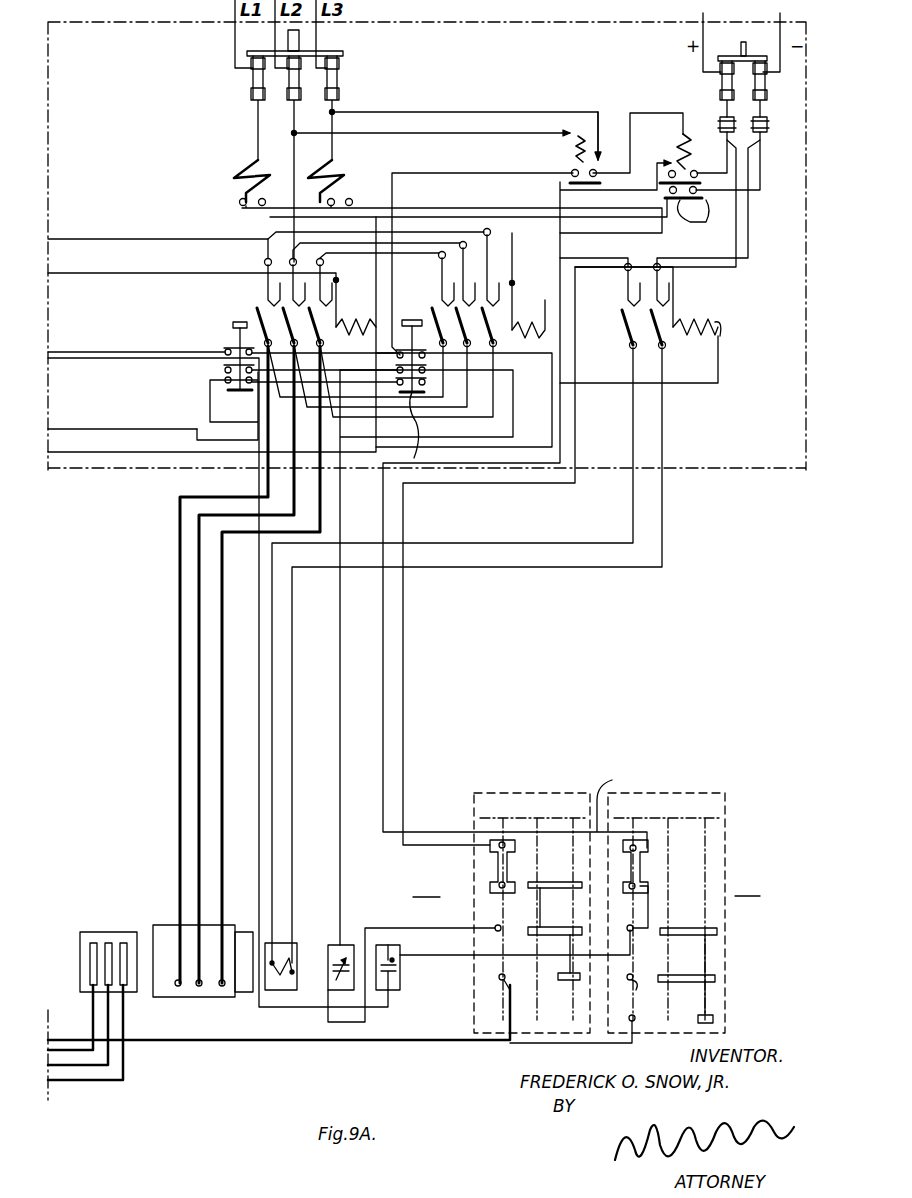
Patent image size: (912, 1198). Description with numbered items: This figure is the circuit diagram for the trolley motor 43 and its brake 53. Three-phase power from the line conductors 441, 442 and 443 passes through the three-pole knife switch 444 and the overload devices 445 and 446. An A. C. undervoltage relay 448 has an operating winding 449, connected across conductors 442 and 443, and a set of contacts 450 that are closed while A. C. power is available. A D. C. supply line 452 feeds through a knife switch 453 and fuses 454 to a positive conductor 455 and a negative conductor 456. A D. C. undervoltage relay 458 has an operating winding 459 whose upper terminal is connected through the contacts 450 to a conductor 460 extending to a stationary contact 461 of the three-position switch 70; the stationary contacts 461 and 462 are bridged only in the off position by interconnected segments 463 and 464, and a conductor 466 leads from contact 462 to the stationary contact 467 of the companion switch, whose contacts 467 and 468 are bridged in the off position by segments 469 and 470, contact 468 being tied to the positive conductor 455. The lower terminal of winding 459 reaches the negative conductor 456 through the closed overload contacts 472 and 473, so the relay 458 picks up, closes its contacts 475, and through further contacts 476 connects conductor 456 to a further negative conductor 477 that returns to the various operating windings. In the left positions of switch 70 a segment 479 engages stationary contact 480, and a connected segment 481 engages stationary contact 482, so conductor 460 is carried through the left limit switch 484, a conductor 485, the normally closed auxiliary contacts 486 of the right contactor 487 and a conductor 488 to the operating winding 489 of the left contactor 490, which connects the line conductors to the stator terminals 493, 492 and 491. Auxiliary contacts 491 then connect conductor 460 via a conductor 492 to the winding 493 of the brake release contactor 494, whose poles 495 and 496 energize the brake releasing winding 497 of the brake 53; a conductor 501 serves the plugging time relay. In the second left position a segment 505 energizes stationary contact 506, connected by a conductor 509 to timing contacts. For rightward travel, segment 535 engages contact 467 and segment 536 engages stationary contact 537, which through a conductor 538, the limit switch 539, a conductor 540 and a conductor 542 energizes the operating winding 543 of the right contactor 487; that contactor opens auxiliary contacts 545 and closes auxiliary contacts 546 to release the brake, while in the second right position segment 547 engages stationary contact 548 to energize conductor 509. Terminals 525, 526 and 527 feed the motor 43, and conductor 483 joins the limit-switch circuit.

The trolley motor 43 is at (157, 918).
The brake 53 is at (297, 948).
The three-position switch 70 is at (730, 812).
The line conductor 441 is at (250, 42).
The line conductor 442 is at (286, 54).
The line conductor 443 is at (300, 40).
The knife switch 444 is at (343, 53).
The overload device 445 is at (245, 172).
The overload device 446 is at (338, 172).
The A. C. undervoltage relay 448 is at (590, 128).
The operating winding 449 is at (575, 148).
The contacts 450 is at (572, 168).
The D. C. supply line 452 is at (782, 36).
The knife switch 453 is at (718, 60).
The fuses 454 is at (752, 124).
The positive conductor 455 is at (756, 154).
The negative conductor 456 is at (242, 210).
The D. C. undervoltage relay 458 is at (695, 118).
The operating winding 459 is at (680, 150).
The conductor 460 is at (100, 452).
The stationary contact 461 is at (645, 836).
The stationary contact 462 is at (644, 893).
The segment 463 is at (646, 851).
The segment 464 is at (646, 884).
The conductor 466 is at (600, 900).
The stationary contact 467 is at (516, 885).
The stationary contact 468 is at (516, 850).
The segment 469 is at (498, 885).
The segment 470 is at (500, 843).
The contacts 472 is at (238, 198).
The contacts 473 is at (350, 198).
The contacts 475 is at (680, 176).
The contacts 476 is at (678, 218).
The negative conductor 477 is at (108, 278).
The segment 479 is at (718, 930).
The stationary contact 480 is at (630, 932).
The segment 481 is at (716, 978).
The stationary contact 482 is at (644, 991).
The conductor 483 is at (458, 958).
The left limit switch 484 is at (402, 974).
The conductor 485 is at (110, 366).
The auxiliary contacts 486 is at (225, 366).
The right contactor 487 is at (262, 290).
The conductor 488 is at (197, 437).
The operating winding 489 is at (540, 322).
The left contactor 490 is at (506, 345).
The stator terminal 491 is at (180, 1008).
The stator terminal 492 is at (205, 1020).
The stator terminal 493 is at (722, 340).
The brake release contactor 494 is at (705, 310).
The pole 495 is at (630, 347).
The pole 496 is at (664, 350).
The brake releasing winding 497 is at (278, 950).
The conductor 501 is at (425, 324).
The segment 505 is at (714, 1019).
The stationary contact 506 is at (636, 1018).
The conductor 509 is at (580, 1044).
The plug terminal 525 is at (92, 984).
The plug terminal 526 is at (106, 984).
The plug terminal 527 is at (121, 984).
The segment 535 is at (556, 870).
The segment 536 is at (540, 934).
The stationary contact 537 is at (518, 918).
The conductor 538 is at (425, 932).
The limit switch 539 is at (341, 940).
The conductor 540 is at (95, 232).
The conductor 542 is at (538, 412).
The operating winding 543 is at (356, 316).
The auxiliary contacts 545 is at (236, 340).
The auxiliary contacts 546 is at (232, 392).
The segment 547 is at (566, 981).
The stationary contact 548 is at (498, 979).